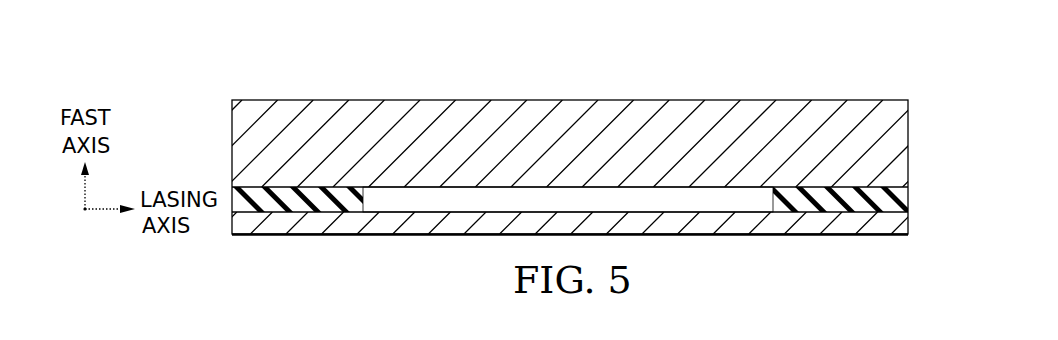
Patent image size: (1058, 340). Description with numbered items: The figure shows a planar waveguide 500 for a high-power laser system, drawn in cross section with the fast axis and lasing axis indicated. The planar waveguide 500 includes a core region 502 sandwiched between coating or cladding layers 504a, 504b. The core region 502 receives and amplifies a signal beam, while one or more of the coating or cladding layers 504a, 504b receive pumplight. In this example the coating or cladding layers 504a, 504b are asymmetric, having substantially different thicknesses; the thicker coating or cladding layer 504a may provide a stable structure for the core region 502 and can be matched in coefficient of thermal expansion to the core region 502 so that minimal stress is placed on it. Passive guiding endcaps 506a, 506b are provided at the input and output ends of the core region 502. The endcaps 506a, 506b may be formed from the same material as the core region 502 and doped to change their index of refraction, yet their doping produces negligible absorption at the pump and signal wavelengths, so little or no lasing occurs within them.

The planar waveguide 500 is at (714, 58).
The core region 502 is at (403, 205).
The coating or cladding layer 504a is at (402, 105).
The coating or cladding layer 504b is at (737, 225).
The passive guiding endcap 506a is at (298, 205).
The passive guiding endcap 506b is at (852, 208).